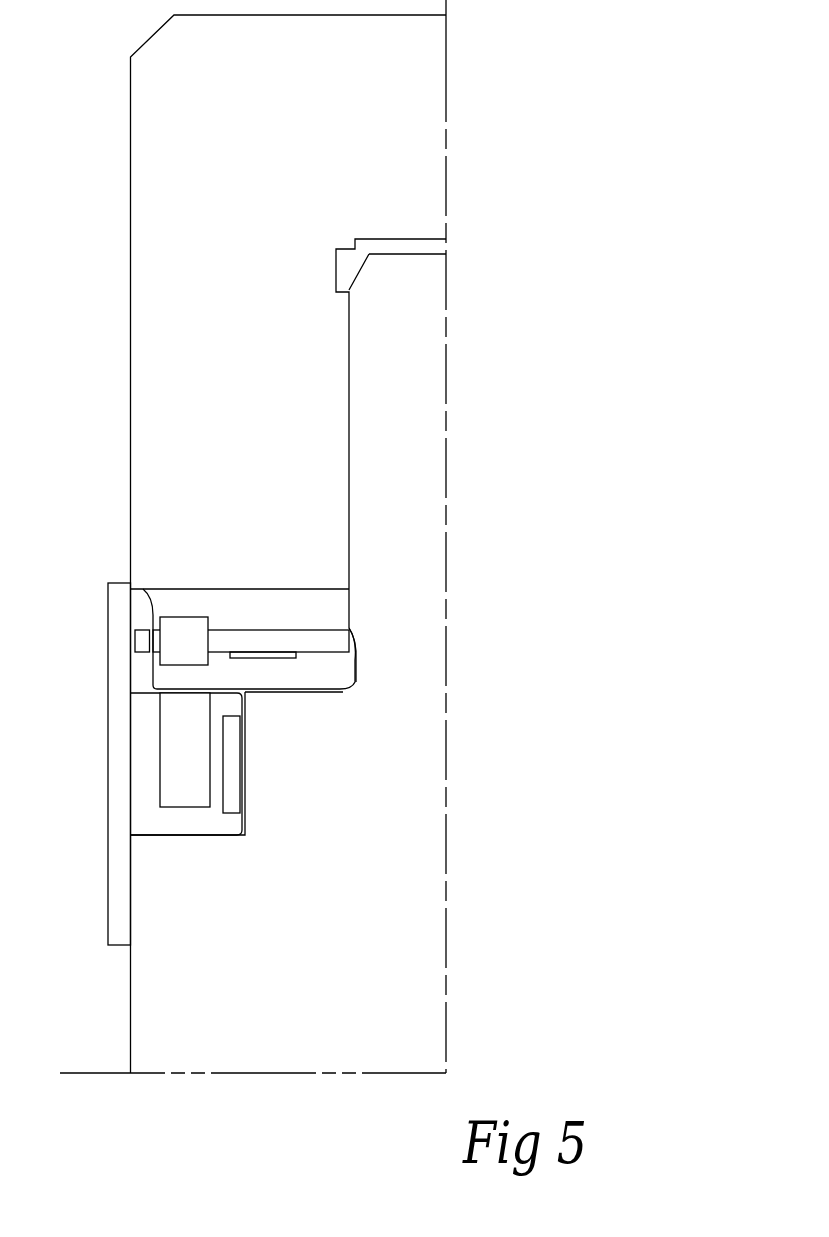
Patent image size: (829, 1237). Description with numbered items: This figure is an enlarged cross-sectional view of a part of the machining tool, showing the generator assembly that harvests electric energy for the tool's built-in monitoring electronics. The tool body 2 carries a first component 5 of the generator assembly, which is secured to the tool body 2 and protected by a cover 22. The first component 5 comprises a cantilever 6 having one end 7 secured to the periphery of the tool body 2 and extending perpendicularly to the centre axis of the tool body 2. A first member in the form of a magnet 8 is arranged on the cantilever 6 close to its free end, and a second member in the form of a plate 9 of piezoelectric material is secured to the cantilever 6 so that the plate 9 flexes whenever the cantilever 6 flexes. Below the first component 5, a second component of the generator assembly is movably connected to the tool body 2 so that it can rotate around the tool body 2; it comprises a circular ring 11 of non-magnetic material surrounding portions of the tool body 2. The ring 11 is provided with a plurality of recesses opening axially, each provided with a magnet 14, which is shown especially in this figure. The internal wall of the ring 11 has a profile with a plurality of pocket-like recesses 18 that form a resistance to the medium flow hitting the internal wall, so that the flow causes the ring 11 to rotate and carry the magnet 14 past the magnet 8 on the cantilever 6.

The tool body 2 is at (140, 990).
The first component 5 is at (315, 613).
The cantilever 6 is at (315, 638).
The end 7 is at (350, 642).
The magnet 8 is at (194, 624).
The plate 9 is at (265, 657).
The circular ring 11 is at (188, 764).
The magnet 14 is at (178, 725).
The pocket-like recess 18 is at (232, 765).
The cover 22 is at (115, 649).